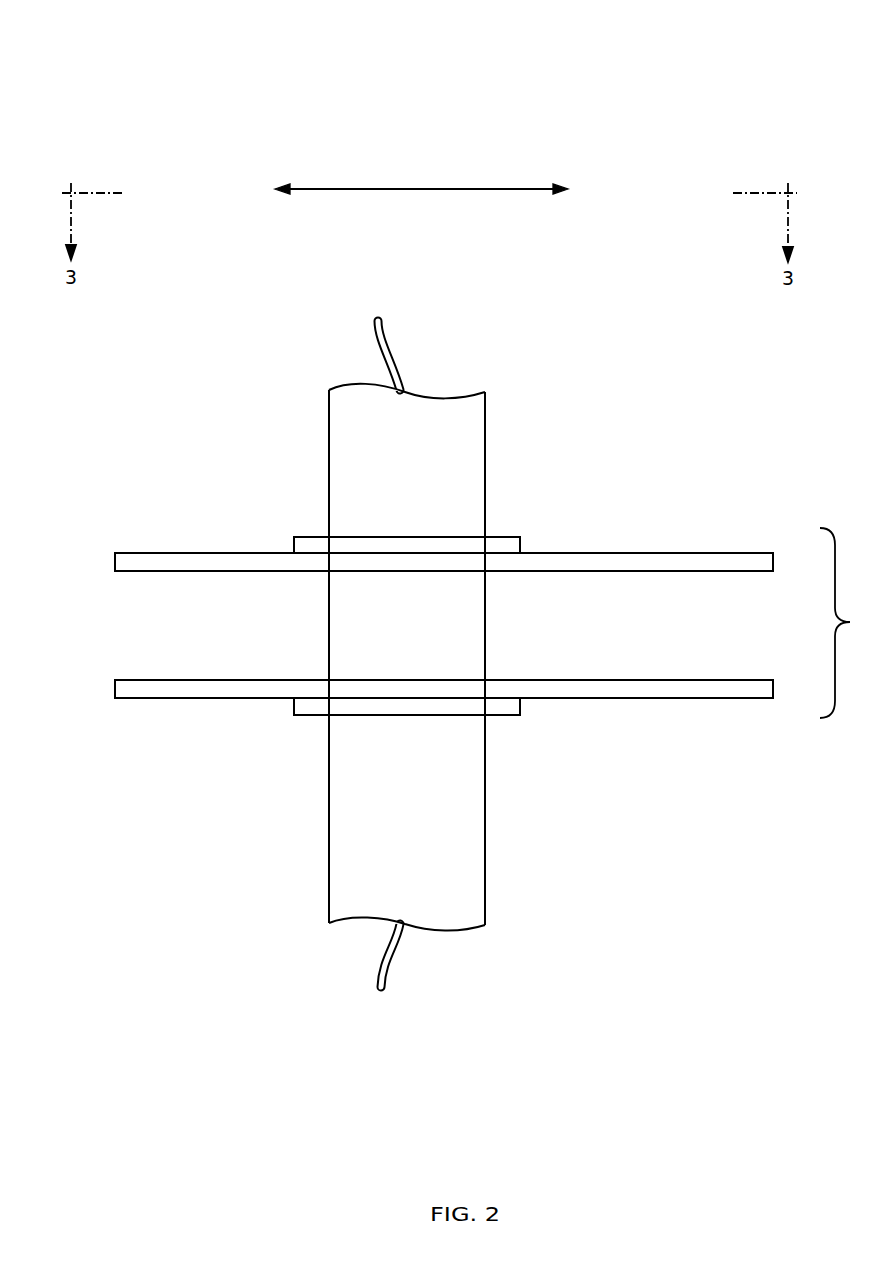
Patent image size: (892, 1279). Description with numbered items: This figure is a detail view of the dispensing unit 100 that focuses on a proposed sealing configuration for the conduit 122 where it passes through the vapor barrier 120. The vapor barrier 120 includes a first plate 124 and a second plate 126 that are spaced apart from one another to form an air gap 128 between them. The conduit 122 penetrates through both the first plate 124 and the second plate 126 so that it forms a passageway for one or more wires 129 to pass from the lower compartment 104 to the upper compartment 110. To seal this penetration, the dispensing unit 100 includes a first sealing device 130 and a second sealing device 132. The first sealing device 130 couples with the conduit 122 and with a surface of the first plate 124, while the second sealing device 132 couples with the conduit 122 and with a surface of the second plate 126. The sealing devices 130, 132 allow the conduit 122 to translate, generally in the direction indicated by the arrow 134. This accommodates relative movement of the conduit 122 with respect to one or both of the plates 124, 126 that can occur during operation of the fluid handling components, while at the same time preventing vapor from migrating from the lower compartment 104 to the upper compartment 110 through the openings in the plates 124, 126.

The dispensing unit 100 is at (693, 107).
The lower compartment 104 is at (219, 1104).
The upper compartment 110 is at (151, 307).
The vapor barrier 120 is at (851, 623).
The conduit 122 is at (303, 909).
The first plate 124 is at (115, 560).
The second plate 126 is at (115, 688).
The air gap 128 is at (752, 616).
The wires 129 is at (391, 358).
The first sealing device 130 is at (528, 527).
The second sealing device 132 is at (528, 725).
The arrow 134 is at (418, 189).